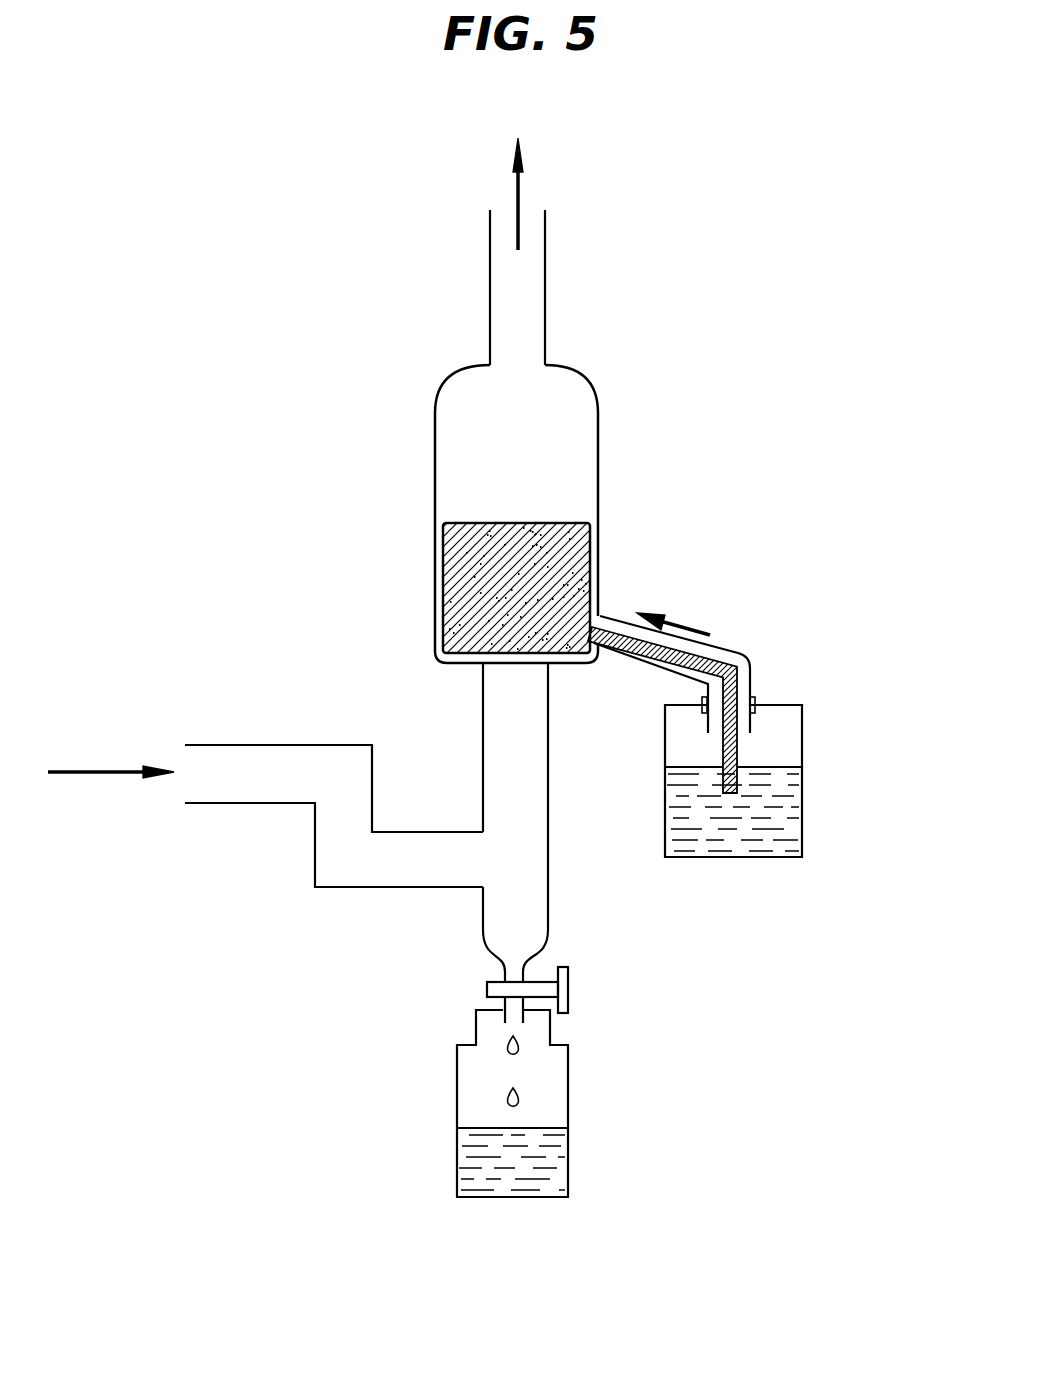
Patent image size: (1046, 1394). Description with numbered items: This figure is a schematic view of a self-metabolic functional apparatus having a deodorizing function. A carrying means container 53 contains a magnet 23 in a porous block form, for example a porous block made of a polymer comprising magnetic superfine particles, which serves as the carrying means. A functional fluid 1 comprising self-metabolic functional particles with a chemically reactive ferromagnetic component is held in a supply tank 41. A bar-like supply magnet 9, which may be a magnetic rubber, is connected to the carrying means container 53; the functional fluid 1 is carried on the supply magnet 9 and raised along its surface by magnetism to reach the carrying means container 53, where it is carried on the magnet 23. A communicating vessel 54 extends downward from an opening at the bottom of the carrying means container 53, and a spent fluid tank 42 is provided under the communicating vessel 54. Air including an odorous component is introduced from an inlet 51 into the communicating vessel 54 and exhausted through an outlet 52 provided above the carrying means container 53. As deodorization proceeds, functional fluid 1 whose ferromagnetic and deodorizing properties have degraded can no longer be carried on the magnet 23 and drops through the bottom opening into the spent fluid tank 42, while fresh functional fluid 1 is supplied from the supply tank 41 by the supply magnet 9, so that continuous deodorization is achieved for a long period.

The outlet 52 is at (535, 251).
The carrying means container 53 is at (435, 473).
The magnet 23 is at (582, 553).
The supply magnet 9 is at (653, 659).
The supply tank 41 is at (803, 732).
The functional fluid 1 is at (793, 802).
The inlet 51 is at (265, 794).
The communicating vessel 54 is at (483, 748).
The spent fluid tank 42 is at (568, 1093).